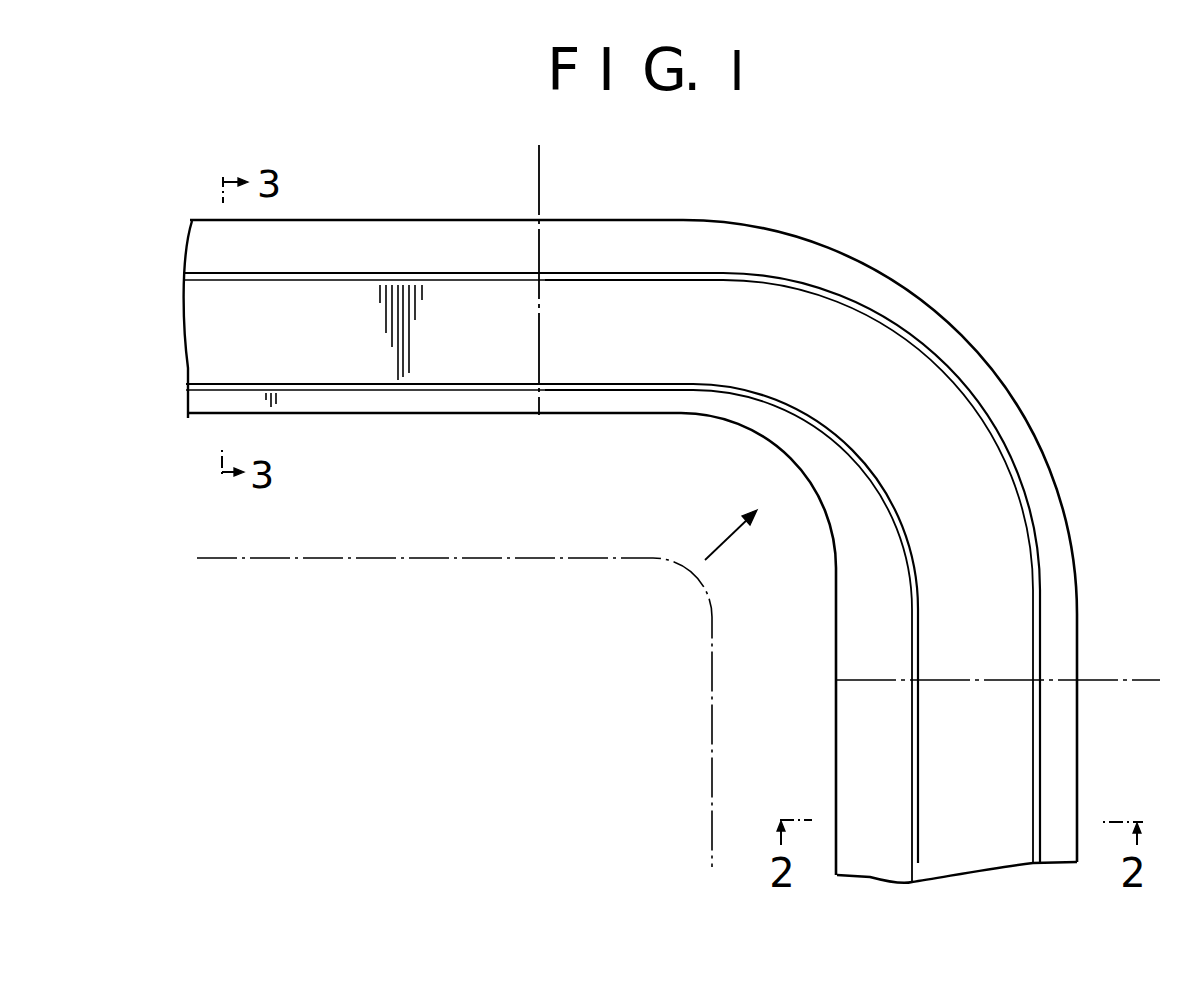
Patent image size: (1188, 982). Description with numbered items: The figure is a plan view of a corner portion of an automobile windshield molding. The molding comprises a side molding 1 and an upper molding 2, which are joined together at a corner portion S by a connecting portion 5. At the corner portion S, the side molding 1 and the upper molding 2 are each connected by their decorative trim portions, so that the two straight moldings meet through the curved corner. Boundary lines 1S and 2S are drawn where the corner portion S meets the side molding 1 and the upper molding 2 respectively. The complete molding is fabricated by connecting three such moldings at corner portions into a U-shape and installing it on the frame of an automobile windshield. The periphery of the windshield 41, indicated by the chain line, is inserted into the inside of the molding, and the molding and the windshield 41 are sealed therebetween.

The side molding 1 is at (985, 875).
The upper molding 2 is at (183, 370).
The connecting portion 5 is at (806, 398).
The windshield 41 is at (712, 747).
The corner portion S is at (1145, 672).
The boundary between first portion and bent portion 1S is at (970, 680).
The boundary between second portion and bent portion 2S is at (539, 331).